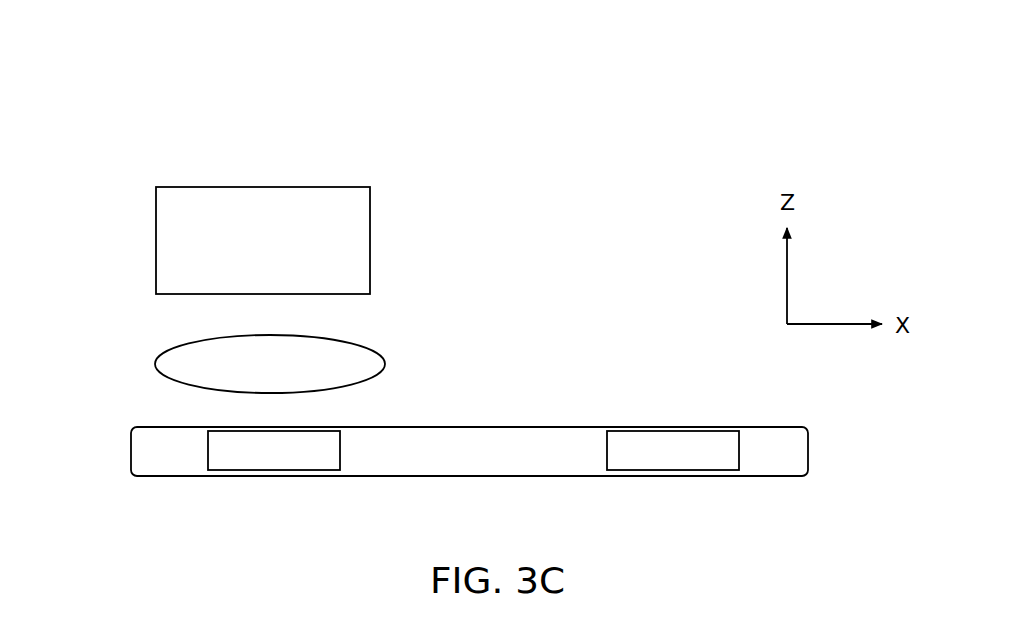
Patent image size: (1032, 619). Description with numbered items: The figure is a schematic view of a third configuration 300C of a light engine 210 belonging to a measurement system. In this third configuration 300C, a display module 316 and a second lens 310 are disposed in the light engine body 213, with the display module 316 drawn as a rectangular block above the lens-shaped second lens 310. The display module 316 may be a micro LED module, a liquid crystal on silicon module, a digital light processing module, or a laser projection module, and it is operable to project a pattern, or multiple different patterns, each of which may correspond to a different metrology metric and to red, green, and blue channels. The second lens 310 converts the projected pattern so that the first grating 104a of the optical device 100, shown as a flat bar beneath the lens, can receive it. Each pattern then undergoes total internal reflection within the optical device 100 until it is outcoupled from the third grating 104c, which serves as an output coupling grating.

The third configuration 300C is at (98, 141).
The light engine 210 is at (801, 101).
The light engine body 213 is at (825, 179).
The display module 316 is at (370, 240).
The second lens 310 is at (385, 364).
The optical device 100 is at (808, 447).
The first grating 104a is at (266, 452).
The third grating 104c is at (667, 452).